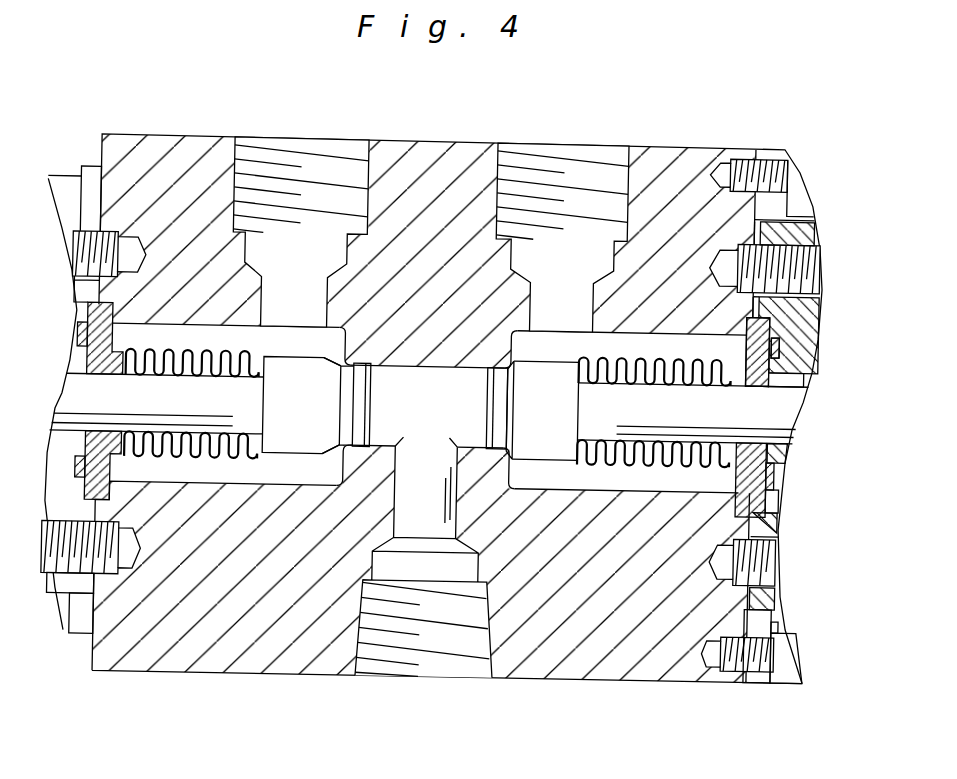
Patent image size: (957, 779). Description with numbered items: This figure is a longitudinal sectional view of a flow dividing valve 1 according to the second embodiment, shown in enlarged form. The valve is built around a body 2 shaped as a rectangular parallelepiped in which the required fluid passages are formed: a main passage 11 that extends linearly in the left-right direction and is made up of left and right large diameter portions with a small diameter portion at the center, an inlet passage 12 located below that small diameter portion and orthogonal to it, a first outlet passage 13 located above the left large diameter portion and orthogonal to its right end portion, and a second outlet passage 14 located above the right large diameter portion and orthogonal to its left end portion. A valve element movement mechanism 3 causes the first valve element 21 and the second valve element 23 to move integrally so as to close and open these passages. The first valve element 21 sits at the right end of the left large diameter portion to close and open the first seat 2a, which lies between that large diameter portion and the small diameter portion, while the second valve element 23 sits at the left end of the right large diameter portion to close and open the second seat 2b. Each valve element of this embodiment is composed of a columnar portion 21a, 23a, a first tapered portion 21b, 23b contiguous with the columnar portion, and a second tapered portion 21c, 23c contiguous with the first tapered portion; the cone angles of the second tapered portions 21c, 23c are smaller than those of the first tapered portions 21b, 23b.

The flow dividing valve 1 is at (824, 151).
The body 2 is at (650, 680).
The first seat 2a is at (345, 445).
The second seat 2b is at (503, 450).
The valve element movement mechanism 3 is at (824, 421).
The main passage 11 is at (217, 470).
The inlet passage 12 is at (431, 520).
The first outlet passage 13 is at (300, 295).
The second outlet passage 14 is at (572, 300).
The first valve element 21 is at (323, 414).
The columnar portion 21a is at (290, 378).
The first tapered portion 21b is at (335, 382).
The second tapered portion 21c is at (365, 392).
The second valve element 23 is at (586, 414).
The columnar portion 23a is at (553, 387).
The first tapered portion 23b is at (508, 420).
The second tapered portion 23c is at (495, 385).